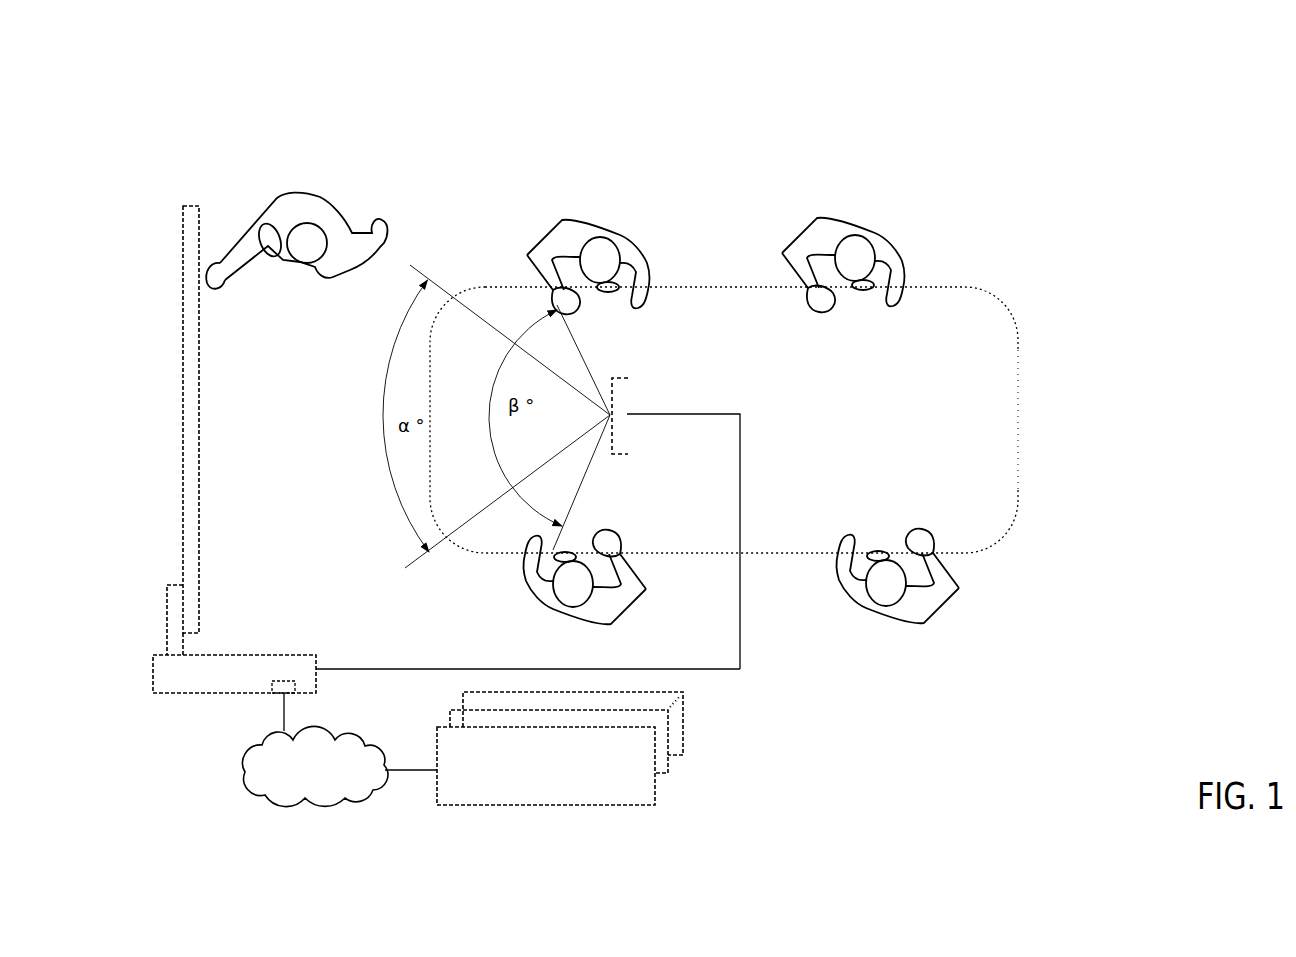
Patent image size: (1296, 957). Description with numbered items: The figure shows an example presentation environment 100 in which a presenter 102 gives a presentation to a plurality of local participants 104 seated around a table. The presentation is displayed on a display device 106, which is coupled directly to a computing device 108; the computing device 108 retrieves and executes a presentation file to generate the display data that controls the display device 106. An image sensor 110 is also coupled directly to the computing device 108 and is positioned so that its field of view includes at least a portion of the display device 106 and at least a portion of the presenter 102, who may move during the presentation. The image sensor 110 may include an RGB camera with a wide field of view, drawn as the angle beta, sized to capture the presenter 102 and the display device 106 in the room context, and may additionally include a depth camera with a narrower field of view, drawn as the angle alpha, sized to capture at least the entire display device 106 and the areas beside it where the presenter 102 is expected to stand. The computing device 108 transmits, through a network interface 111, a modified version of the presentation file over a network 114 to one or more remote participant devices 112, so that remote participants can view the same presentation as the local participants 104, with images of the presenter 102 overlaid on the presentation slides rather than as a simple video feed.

The presentation environment 100 is at (806, 53).
The presenter 102 is at (347, 186).
The local participants 104 is at (598, 184).
The display device 106 is at (183, 207).
The computing device 108 is at (246, 681).
The image sensor 110 is at (619, 373).
The network interface 111 is at (278, 684).
The remote participant device 112 is at (603, 800).
The network 114 is at (331, 790).